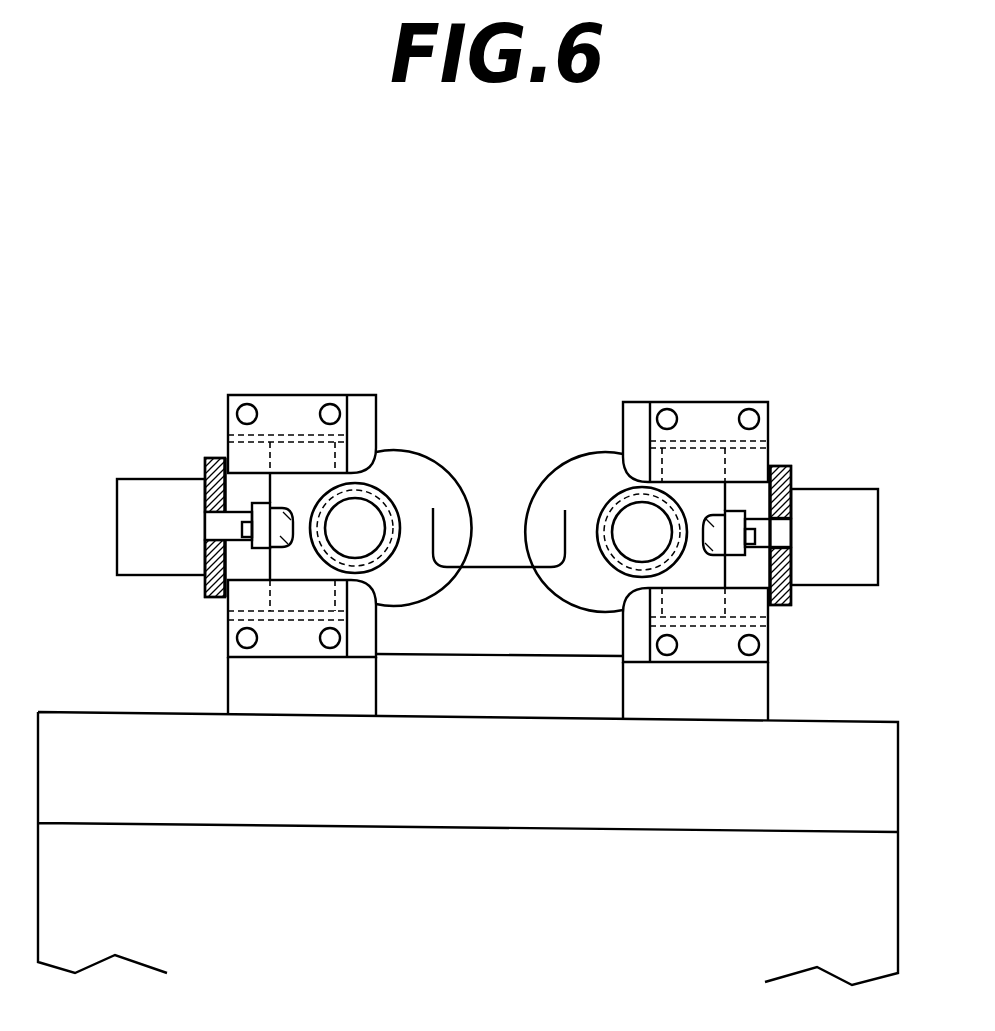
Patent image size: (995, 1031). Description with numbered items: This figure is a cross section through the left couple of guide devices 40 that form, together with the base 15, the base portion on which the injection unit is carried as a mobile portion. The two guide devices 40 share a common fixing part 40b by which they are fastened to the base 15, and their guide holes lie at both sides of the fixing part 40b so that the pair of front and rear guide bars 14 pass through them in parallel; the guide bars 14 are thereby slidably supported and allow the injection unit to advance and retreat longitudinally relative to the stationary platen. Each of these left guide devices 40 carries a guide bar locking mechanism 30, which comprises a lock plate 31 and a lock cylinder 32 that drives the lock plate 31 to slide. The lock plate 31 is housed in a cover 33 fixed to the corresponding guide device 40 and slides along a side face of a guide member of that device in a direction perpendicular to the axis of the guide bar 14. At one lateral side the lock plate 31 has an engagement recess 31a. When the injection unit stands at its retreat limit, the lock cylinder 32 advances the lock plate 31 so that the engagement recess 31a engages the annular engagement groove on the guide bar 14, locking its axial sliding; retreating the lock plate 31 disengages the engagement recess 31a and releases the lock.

The guide bar 14 is at (361, 528).
The base 15 is at (857, 755).
The guide bar locking mechanism 30 is at (389, 358).
The lock plate 31 is at (697, 442).
The engagement recess 31a is at (600, 534).
The lock cylinder 32 is at (810, 505).
The cover 33 is at (678, 402).
The guide device 40 is at (397, 473).
The fixing part 40b is at (498, 693).